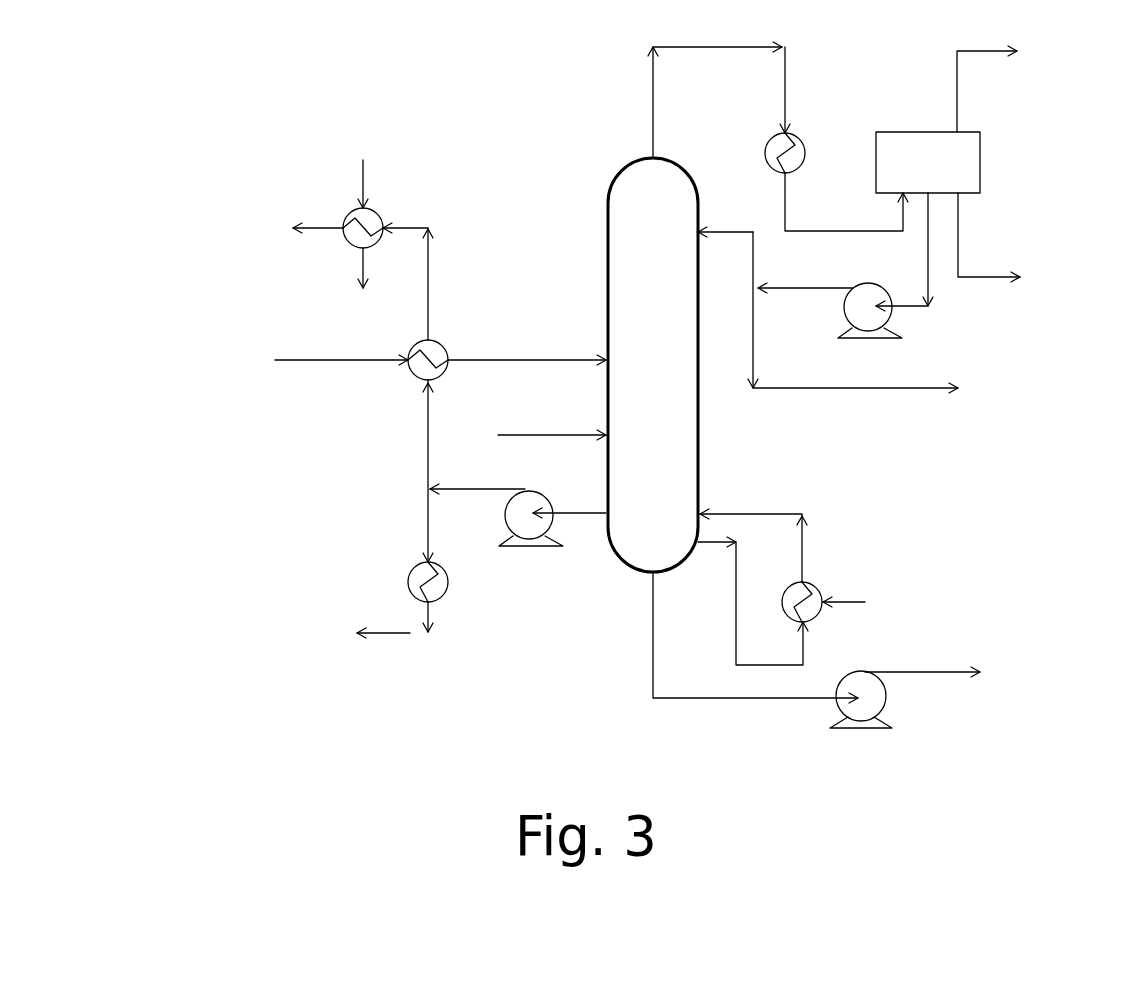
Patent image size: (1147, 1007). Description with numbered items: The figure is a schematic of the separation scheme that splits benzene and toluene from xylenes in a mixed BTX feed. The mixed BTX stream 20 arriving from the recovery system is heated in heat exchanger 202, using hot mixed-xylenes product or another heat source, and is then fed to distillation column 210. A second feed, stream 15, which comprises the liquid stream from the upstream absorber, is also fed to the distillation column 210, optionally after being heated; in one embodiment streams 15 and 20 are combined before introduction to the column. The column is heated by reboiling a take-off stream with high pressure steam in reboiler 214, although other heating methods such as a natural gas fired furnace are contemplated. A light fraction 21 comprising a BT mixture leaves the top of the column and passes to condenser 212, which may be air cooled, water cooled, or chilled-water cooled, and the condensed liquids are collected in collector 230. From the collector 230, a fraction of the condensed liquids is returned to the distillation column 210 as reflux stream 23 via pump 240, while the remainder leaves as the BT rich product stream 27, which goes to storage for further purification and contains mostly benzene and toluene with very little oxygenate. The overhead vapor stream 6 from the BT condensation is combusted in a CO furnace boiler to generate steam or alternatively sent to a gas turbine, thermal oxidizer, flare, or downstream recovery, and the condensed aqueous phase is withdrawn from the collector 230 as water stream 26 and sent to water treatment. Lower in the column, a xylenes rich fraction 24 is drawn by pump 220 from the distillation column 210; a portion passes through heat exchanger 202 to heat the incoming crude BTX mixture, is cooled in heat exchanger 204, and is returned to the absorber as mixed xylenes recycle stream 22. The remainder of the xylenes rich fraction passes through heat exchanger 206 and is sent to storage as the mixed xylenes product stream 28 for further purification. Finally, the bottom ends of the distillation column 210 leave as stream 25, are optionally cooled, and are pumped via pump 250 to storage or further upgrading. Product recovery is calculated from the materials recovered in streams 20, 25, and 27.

The vapor stream 6 is at (997, 63).
The stream 15 is at (513, 432).
The mixed BTX stream 20 is at (297, 355).
The overhead vapor stream 21 is at (646, 108).
The mixed xylenes recycle stream 22 is at (305, 221).
The reflux stream 23 is at (791, 298).
The side draw stream 24 is at (460, 485).
The stream 25 is at (659, 620).
The water stream 26 is at (967, 232).
The BT rich stream 27 is at (866, 397).
The mixed xylenes product stream 28 is at (372, 627).
The heat exchanger 202 is at (507, 395).
The heat exchanger 204 is at (384, 208).
The storage cooler 206 is at (449, 597).
The distillation column 210 is at (653, 365).
The condenser 212 is at (816, 172).
The reboiler 214 is at (845, 587).
The pump 220 is at (552, 504).
The collector 230 is at (928, 162).
The pump 240 is at (885, 284).
The pump 250 is at (938, 694).